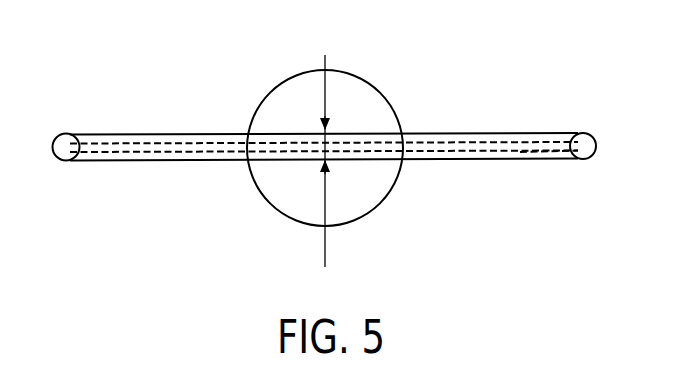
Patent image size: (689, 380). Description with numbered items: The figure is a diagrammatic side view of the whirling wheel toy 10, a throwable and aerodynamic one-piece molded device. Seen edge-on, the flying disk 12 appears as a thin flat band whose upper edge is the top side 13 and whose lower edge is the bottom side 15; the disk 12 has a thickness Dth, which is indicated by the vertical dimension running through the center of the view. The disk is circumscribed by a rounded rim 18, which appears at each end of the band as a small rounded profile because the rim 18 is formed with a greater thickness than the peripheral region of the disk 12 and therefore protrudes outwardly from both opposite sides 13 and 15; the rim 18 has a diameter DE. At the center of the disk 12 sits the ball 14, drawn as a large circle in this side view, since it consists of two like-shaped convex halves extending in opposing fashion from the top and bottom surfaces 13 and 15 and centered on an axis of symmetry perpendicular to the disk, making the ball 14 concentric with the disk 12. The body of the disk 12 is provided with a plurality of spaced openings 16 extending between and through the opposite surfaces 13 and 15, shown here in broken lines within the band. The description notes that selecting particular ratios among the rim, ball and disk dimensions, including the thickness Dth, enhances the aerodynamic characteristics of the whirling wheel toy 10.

The whirling wheel toy 10 is at (316, 147).
The flying disk 12 is at (143, 148).
The top side 13 is at (164, 143).
The ball 14 is at (392, 103).
The bottom side 15 is at (554, 149).
The openings 16 is at (476, 149).
The rounded rim 18 is at (68, 147).
The rim diameter DE is at (584, 129).
The disk thickness Dth is at (355, 179).